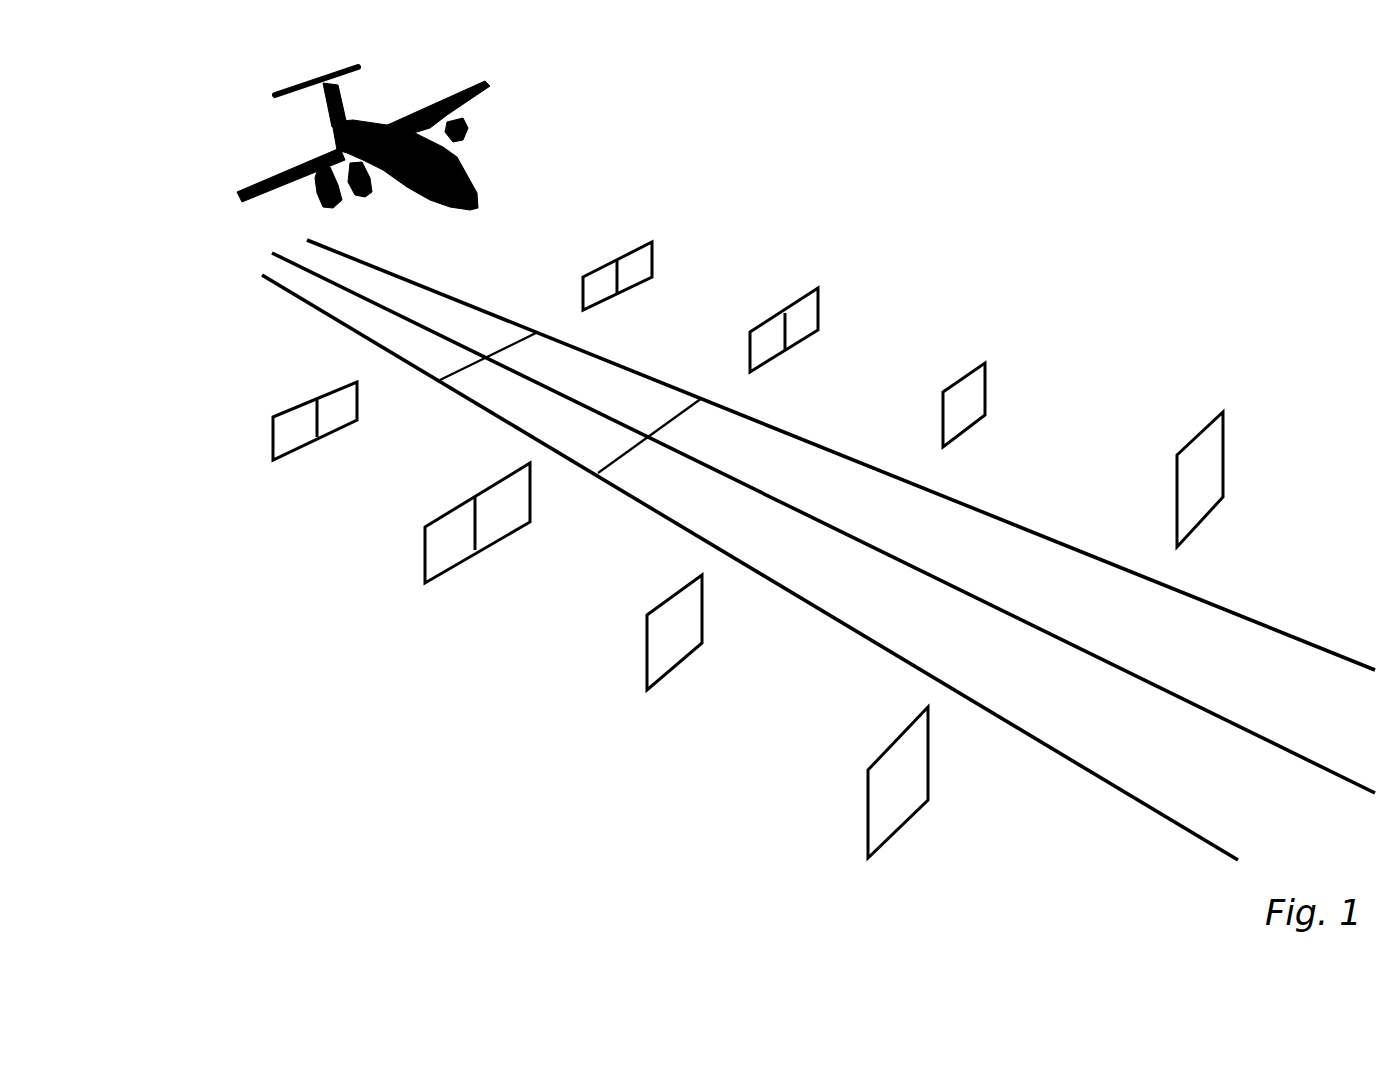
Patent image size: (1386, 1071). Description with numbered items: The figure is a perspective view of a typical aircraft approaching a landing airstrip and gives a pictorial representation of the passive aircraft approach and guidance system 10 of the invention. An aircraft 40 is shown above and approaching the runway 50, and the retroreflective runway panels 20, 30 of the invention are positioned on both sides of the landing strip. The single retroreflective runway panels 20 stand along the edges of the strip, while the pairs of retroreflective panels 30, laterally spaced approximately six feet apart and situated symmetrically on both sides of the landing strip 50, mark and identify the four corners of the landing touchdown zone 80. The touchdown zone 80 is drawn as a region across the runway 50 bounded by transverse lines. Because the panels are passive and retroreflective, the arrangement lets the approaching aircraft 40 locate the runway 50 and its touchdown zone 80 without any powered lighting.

The passive aircraft approach and guidance system 10 is at (987, 232).
The retroreflective runway panel 20 is at (995, 408).
The pair of retroreflective panels 30 is at (665, 270).
The aircraft 40 is at (480, 87).
The runway 50 is at (1248, 672).
The landing touchdown zone 80 is at (593, 382).